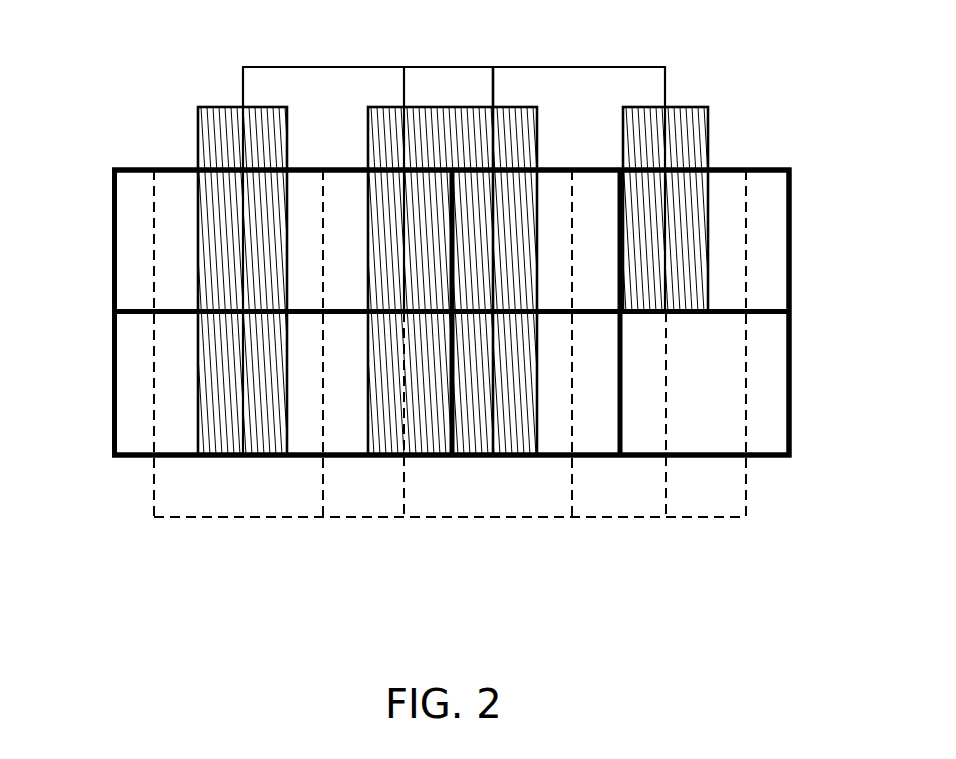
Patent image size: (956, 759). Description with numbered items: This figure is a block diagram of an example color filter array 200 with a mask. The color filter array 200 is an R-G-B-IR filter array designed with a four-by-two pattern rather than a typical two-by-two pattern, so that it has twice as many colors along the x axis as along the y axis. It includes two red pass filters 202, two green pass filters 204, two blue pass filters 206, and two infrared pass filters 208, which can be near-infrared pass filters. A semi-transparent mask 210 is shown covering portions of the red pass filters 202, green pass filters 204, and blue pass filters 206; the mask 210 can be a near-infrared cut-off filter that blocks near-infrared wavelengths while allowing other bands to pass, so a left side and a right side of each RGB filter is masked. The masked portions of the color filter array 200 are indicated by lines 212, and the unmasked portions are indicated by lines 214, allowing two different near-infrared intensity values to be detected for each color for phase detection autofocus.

The color filter array 200 is at (463, 666).
The red pass filter 202 is at (355, 168).
The green pass filter 204 is at (113, 195).
The blue pass filter 206 is at (113, 405).
The infrared pass filter 208 is at (792, 413).
The mask 210 is at (210, 106).
The lines indicating masked portions 212 is at (453, 67).
The lines indicating unmasked portions 214 is at (443, 518).